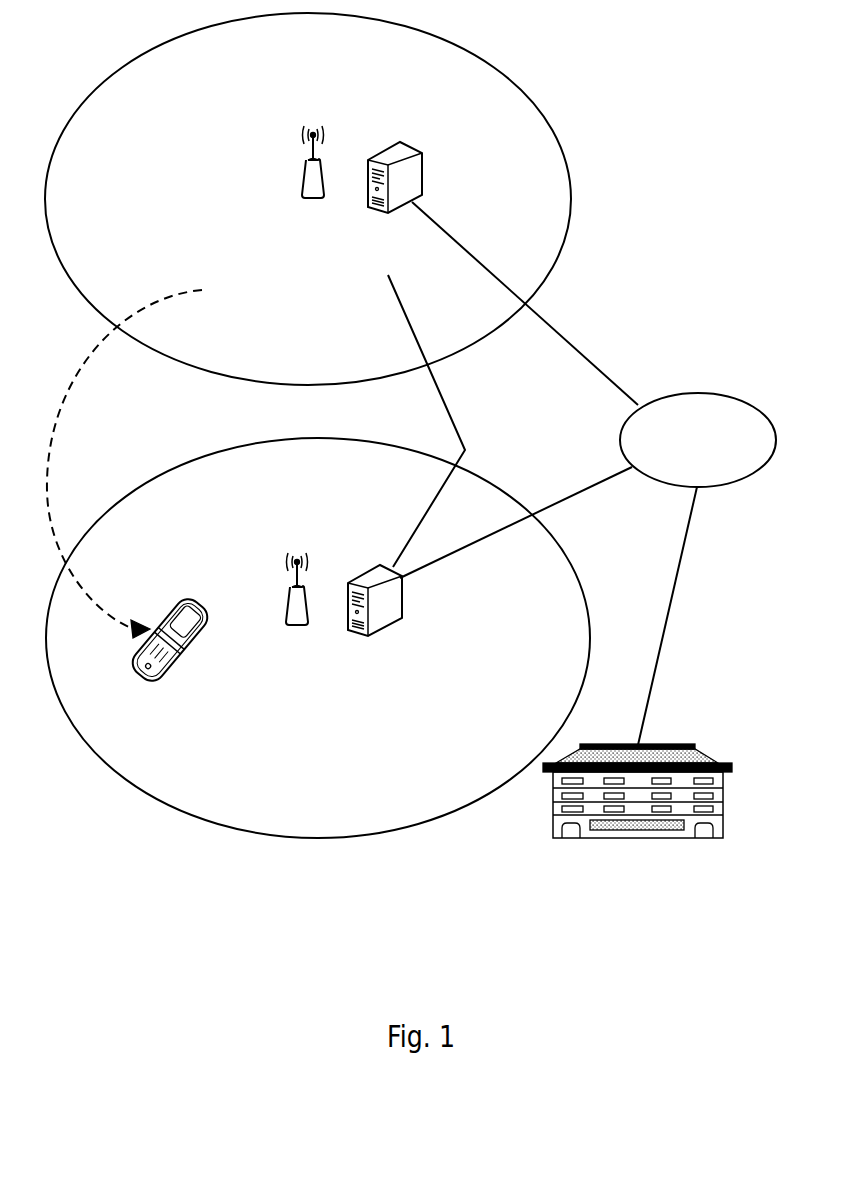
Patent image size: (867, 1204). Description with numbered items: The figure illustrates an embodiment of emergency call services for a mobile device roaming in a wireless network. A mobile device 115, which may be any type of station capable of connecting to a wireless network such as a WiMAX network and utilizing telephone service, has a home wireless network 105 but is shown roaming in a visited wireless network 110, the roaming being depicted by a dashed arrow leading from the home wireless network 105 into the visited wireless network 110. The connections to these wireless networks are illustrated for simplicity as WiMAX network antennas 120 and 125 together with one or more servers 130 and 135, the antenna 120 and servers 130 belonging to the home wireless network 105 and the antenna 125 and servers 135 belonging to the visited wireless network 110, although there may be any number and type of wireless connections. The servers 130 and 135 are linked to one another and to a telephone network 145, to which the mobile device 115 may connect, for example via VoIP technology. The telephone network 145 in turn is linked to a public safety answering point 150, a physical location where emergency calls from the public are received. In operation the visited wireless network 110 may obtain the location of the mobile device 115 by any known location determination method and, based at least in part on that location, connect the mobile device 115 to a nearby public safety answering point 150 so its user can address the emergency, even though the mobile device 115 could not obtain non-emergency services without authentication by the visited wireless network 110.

The home wireless network 105 is at (308, 199).
The visited wireless network 110 is at (318, 638).
The mobile device 115 is at (172, 660).
The antenna 120 is at (314, 188).
The antenna 125 is at (296, 615).
The servers 130 is at (393, 206).
The servers 135 is at (374, 628).
The telephone network 145 is at (698, 440).
The public safety answering point 150 is at (637, 826).